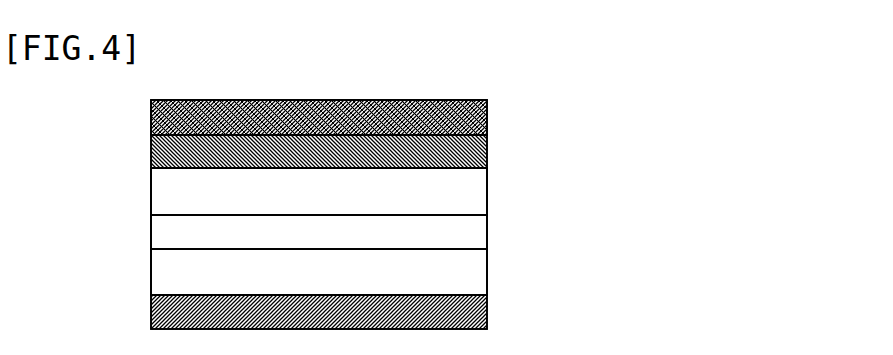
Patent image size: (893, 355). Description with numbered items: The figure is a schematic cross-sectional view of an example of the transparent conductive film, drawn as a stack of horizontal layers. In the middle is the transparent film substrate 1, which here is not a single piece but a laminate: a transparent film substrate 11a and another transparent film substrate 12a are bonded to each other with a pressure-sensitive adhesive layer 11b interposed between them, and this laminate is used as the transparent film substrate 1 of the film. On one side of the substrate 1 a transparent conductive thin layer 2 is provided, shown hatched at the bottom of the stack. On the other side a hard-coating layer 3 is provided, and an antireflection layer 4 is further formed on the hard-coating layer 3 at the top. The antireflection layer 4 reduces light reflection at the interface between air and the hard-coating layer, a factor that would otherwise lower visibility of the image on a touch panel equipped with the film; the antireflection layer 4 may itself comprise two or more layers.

The transparent film substrate 1 is at (426, 229).
The transparent conductive thin layer 2 is at (487, 311).
The hard-coating layer 3 is at (487, 143).
The antireflection layer 4 is at (487, 113).
The transparent film substrate 11a is at (468, 188).
The pressure-sensitive adhesive layer 11b is at (472, 230).
The transparent film substrate 12a is at (473, 274).